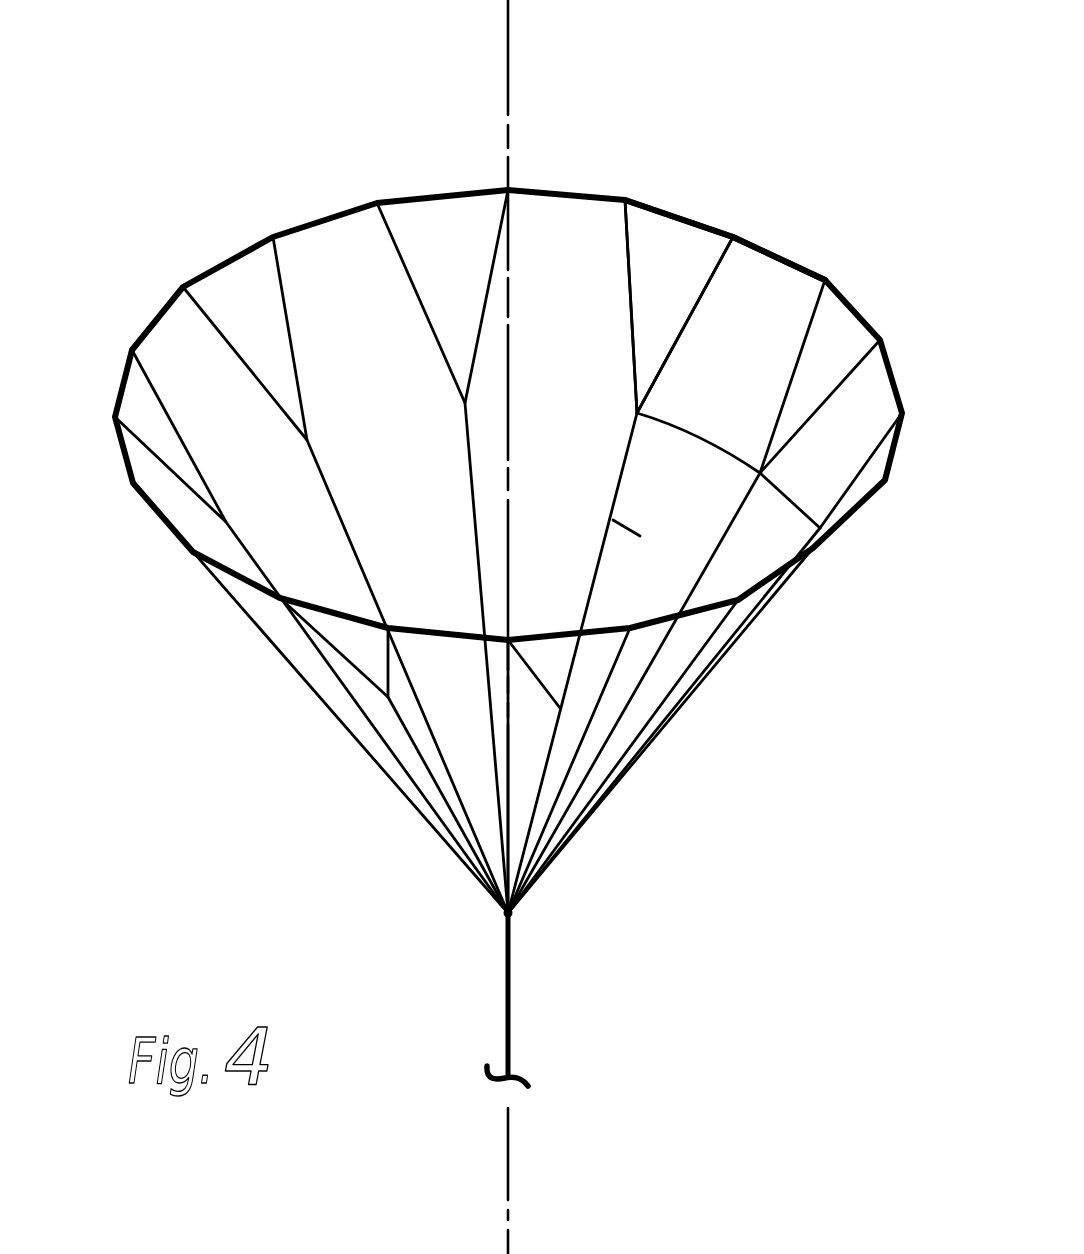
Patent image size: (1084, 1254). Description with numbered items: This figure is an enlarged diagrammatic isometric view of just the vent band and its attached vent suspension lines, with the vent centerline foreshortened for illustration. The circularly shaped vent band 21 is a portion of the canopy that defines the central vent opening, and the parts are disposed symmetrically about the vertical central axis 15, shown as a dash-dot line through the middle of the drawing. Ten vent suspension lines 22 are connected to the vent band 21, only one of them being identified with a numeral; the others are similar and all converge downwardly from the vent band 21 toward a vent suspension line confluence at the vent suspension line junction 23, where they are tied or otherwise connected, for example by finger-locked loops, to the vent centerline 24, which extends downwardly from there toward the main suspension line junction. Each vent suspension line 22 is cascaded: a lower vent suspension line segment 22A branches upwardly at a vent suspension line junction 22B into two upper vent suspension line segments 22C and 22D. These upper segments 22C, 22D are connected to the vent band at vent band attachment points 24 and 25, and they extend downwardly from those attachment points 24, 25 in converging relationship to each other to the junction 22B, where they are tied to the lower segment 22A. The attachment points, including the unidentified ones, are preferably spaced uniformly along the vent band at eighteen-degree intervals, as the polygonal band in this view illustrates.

The vertical central axis 15 is at (508, 44).
The vent band 21 is at (347, 212).
The vent suspension line 22 is at (624, 586).
The lower vent suspension line segment 22A is at (640, 536).
The vent suspension line junction 22B is at (820, 528).
The upper vent suspension line segment 22C is at (628, 250).
The upper vent suspension line segment 22D is at (733, 237).
The vent suspension line junction 23 is at (515, 913).
The vent centerline 24 is at (512, 1003).
The vent band attachment point 25 is at (735, 238).